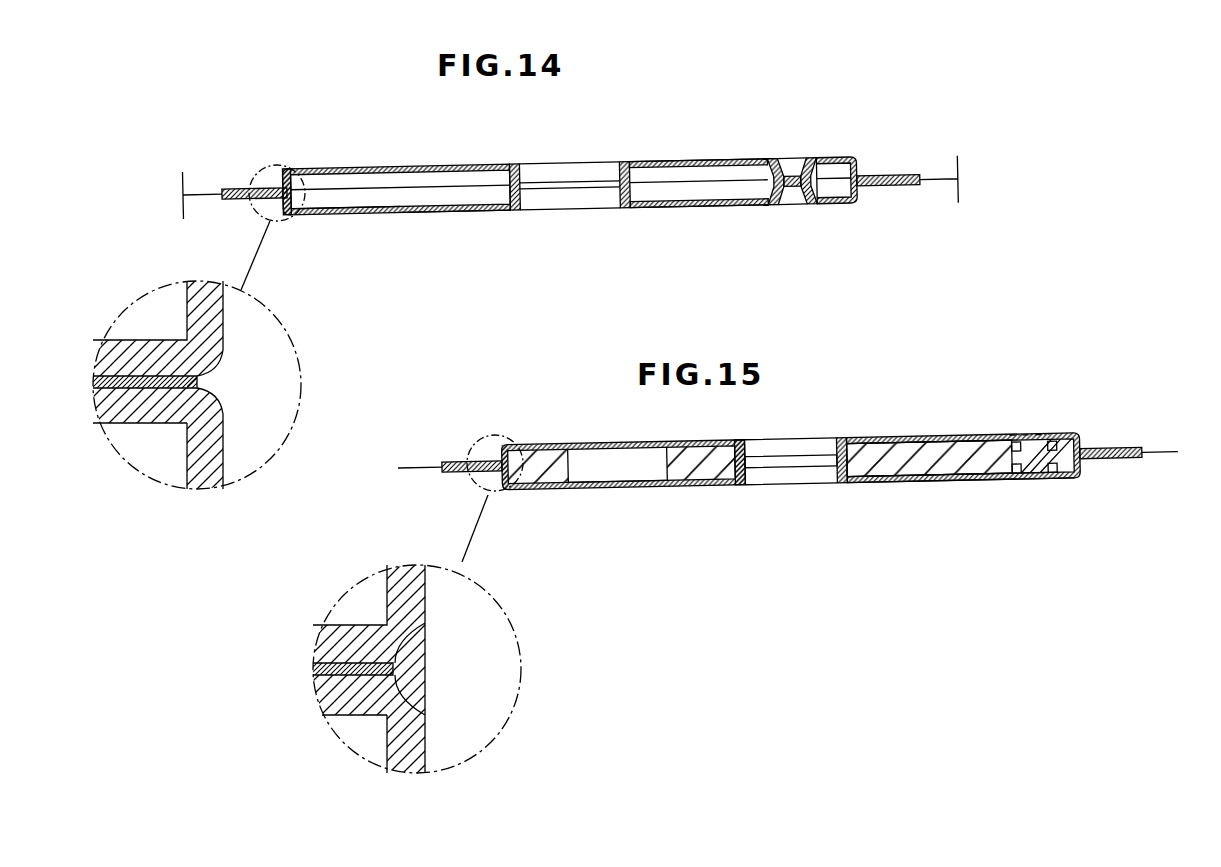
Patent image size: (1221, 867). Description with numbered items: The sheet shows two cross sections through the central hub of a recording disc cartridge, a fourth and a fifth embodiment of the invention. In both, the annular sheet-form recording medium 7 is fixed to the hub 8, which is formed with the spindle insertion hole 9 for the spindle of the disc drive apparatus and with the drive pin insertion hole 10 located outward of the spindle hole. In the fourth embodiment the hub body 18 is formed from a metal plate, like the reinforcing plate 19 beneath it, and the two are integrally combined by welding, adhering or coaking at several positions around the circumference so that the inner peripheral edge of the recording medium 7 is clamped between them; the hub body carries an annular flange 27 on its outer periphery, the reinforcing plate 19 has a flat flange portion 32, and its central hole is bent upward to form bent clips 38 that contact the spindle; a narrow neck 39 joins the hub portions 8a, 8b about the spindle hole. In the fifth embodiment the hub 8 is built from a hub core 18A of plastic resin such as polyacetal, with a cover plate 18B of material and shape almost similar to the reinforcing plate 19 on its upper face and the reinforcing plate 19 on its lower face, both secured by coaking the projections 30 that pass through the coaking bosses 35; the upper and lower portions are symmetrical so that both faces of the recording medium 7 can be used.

In FIG. 14, the recording medium 7 is at (208, 192).
In FIG. 15, the recording medium 7 is at (398, 468).
In FIG. 14, the hub 8 is at (713, 158).
In FIG. 15, the hub 8 is at (545, 492).
In FIG. 14, the upper casing wall 8a is at (650, 163).
In FIG. 15, the upper casing wall 8a is at (1060, 433).
In FIG. 14, the lower casing wall 8b is at (692, 208).
In FIG. 15, the lower casing wall 8b is at (950, 485).
In FIG. 14, the spindle insertion hole 9 is at (563, 190).
In FIG. 15, the spindle insertion hole 9 is at (777, 475).
In FIG. 14, the drive pin insertion hole 10 is at (358, 218).
In FIG. 15, the drive pin insertion hole 10 is at (573, 488).
In FIG. 14, the hub body 18 is at (455, 169).
In FIG. 15, the hub body 18 is at (987, 384).
In FIG. 15, the hub core 18A is at (898, 450).
In FIG. 15, the cover plate 18B is at (947, 440).
In FIG. 14, the reinforcing plate 19 is at (477, 216).
In FIG. 15, the reinforcing plate 19 is at (903, 485).
In FIG. 14, the annular flange 27 is at (247, 200).
In FIG. 15, the annular flange 27 is at (462, 460).
In FIG. 15, the projections 30 is at (1030, 446).
In FIG. 14, the flat flange portion 32 is at (252, 203).
In FIG. 15, the flat flange portion 32 is at (456, 480).
In FIG. 15, the coaking bosses 35 is at (1013, 478).
In FIG. 14, the bent clips 38 is at (612, 200).
In FIG. 15, the bent clips 38 is at (833, 437).
In FIG. 14, the neck portion 39 is at (787, 177).